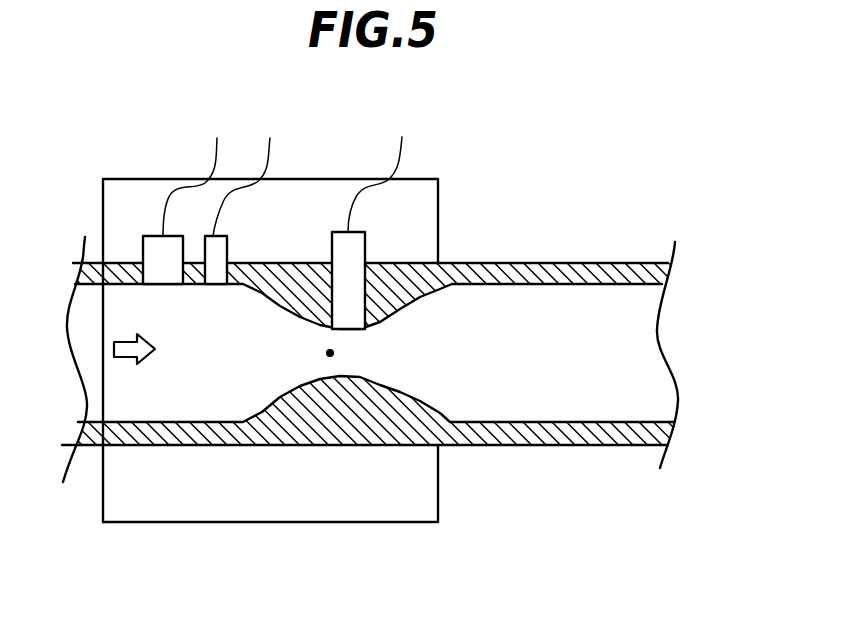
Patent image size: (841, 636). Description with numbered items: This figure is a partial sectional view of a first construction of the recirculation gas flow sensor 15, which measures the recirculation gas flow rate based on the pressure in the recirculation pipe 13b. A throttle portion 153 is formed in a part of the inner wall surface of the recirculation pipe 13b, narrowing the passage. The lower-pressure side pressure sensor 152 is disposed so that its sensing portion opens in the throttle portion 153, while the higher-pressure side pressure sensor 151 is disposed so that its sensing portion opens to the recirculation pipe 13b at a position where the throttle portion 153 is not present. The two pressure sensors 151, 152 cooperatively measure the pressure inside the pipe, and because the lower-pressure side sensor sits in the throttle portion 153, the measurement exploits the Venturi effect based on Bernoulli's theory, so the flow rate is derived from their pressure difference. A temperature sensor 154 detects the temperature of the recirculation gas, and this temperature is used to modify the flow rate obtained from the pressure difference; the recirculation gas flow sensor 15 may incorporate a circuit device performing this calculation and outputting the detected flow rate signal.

The recirculation pipe 13b is at (565, 263).
The recirculation gas flow sensor 15 is at (147, 523).
The higher-pressure side pressure sensor 151 is at (156, 236).
The lower-pressure side pressure sensor 152 is at (343, 232).
The throttle portion 153 is at (329, 358).
The temperature sensor 154 is at (260, 223).